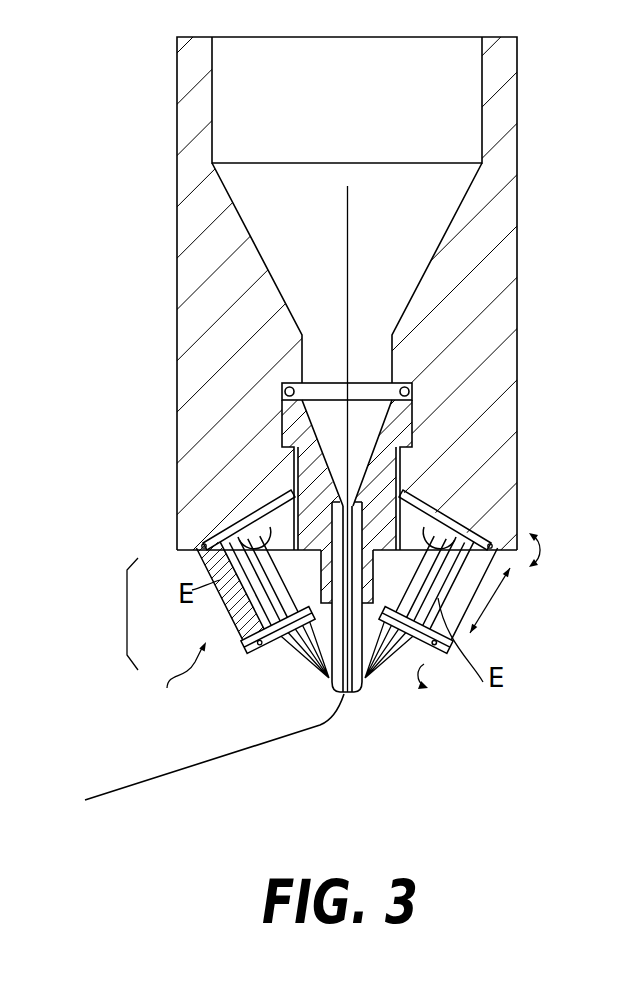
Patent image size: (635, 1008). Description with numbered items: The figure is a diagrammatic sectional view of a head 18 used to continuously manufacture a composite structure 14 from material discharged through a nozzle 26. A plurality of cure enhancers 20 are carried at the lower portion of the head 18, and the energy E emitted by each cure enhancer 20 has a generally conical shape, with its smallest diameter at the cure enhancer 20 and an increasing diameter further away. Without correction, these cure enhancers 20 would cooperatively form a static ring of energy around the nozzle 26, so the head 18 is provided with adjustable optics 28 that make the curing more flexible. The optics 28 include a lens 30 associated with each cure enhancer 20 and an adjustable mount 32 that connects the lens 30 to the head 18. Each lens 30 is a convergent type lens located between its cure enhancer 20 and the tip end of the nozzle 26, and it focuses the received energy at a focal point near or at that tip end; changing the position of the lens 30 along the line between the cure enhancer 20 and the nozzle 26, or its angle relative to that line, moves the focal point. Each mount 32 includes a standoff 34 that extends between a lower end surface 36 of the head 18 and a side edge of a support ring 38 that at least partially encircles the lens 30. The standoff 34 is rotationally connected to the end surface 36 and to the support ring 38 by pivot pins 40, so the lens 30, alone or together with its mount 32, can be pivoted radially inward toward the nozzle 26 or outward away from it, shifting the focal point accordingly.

The head 18 is at (97, 56).
The cure enhancer 20 is at (247, 547).
The nozzle 26 is at (357, 694).
The composite structure 14 is at (130, 785).
The adjustable optics 28 is at (125, 612).
The lower end surface 36 is at (185, 552).
The standoff 34 is at (235, 640).
The lens 30 is at (286, 606).
The support ring 38 is at (312, 640).
The pivot pin 40 is at (201, 545).
The adjustable mount 32 is at (182, 680).